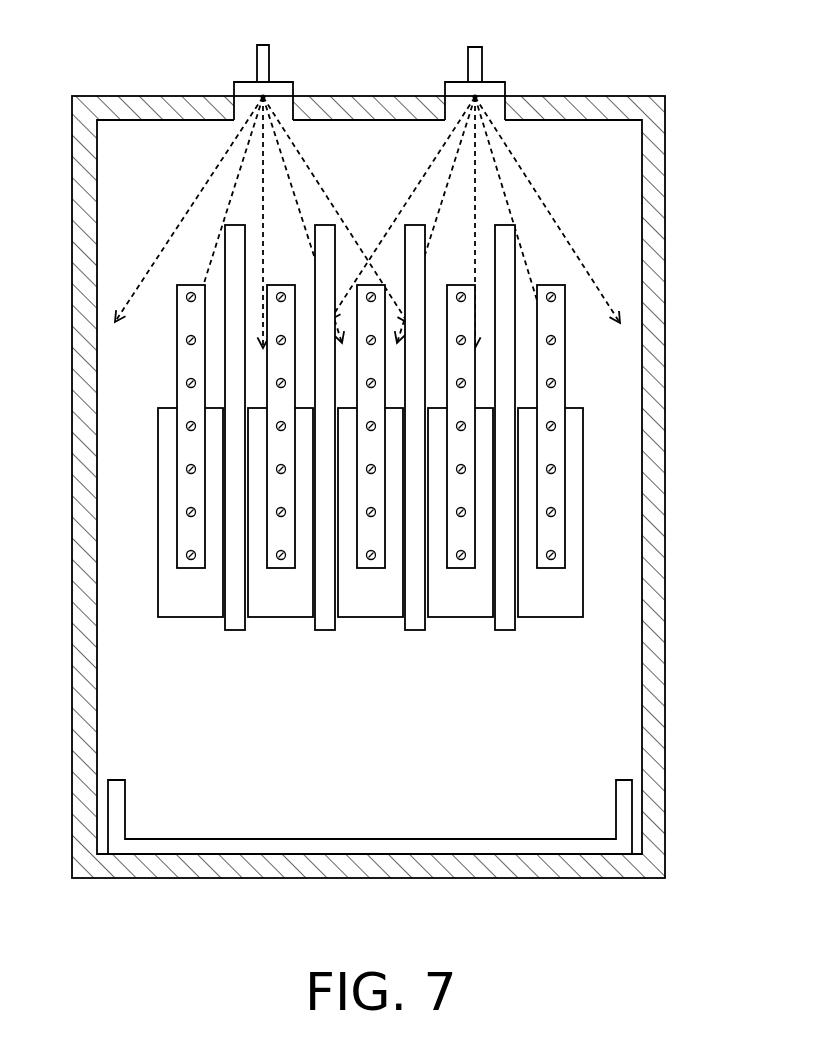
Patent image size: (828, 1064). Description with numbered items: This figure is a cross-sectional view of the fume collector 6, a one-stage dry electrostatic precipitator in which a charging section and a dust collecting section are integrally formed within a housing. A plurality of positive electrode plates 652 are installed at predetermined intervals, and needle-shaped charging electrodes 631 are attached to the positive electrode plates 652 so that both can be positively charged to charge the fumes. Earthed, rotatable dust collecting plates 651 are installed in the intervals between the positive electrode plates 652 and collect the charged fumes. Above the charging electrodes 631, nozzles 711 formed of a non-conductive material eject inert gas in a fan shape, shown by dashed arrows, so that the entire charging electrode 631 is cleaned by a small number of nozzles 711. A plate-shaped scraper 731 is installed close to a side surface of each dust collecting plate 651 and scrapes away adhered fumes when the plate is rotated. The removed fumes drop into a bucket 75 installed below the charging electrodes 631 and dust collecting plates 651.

The fume collector 6 is at (542, 62).
The nozzle 711 is at (245, 87).
The charging electrode 631 is at (177, 383).
The positive electrode plate 652 is at (552, 360).
The dust collecting plate 651 is at (236, 620).
The scraper 731 is at (383, 608).
The bucket 75 is at (509, 846).